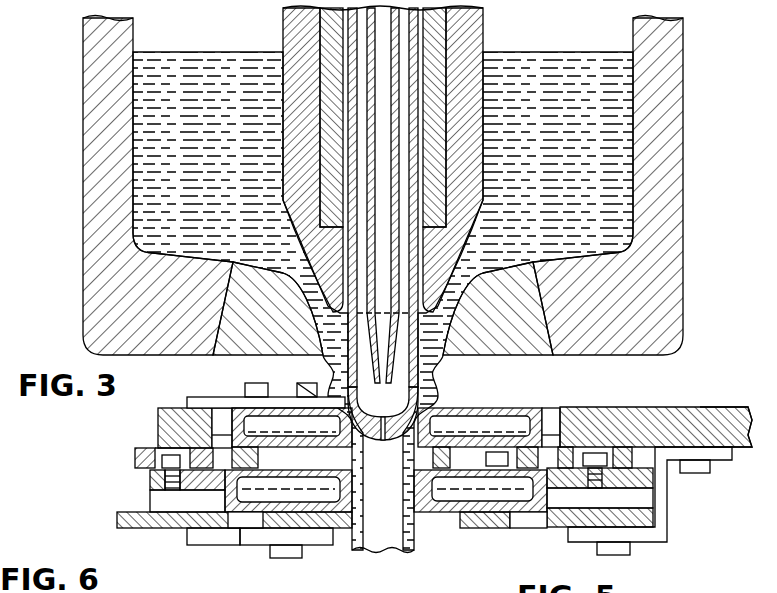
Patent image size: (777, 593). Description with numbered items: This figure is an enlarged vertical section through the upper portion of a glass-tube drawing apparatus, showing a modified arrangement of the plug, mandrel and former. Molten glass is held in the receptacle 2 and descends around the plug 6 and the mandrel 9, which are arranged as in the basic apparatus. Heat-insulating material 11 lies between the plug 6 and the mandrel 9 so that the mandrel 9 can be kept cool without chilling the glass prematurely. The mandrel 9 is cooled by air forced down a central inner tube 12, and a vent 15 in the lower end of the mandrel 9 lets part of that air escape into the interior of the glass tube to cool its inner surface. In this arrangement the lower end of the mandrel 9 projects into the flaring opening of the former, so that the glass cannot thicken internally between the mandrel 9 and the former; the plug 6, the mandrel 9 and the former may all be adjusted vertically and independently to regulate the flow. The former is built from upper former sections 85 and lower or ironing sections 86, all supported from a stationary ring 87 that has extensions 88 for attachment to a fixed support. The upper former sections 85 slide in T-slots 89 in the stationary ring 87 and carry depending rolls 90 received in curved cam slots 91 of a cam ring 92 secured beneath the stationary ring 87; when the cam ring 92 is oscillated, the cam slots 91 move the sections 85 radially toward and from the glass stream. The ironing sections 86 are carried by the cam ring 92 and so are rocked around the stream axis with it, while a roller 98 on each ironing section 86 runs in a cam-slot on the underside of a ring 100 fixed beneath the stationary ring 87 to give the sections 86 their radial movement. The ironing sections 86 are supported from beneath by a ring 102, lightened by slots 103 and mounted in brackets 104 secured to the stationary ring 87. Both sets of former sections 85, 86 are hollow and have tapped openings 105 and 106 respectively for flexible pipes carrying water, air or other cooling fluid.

The receptacle 2 is at (683, 176).
The plug 6 is at (483, 28).
The mandrel 9 is at (410, 42).
The heat-insulating material 11 is at (320, 44).
The inner tube 12 is at (365, 30).
The vent 15 is at (383, 426).
The upper former sections 85 is at (235, 440).
The lower former sections 86 is at (292, 512).
The stationary ring 87 is at (631, 412).
The extensions 88 is at (730, 412).
The T-slots 89 is at (552, 434).
The depending rolls 90 is at (512, 447).
The cam slots 91 is at (463, 446).
The cam ring 92 is at (158, 430).
The roller 98 is at (135, 460).
The ring 100 is at (135, 452).
The ring 102 is at (147, 522).
The slots 103 is at (257, 522).
The brackets 104 is at (662, 497).
The tapped openings 105 is at (246, 390).
The tapped openings 106 is at (305, 389).